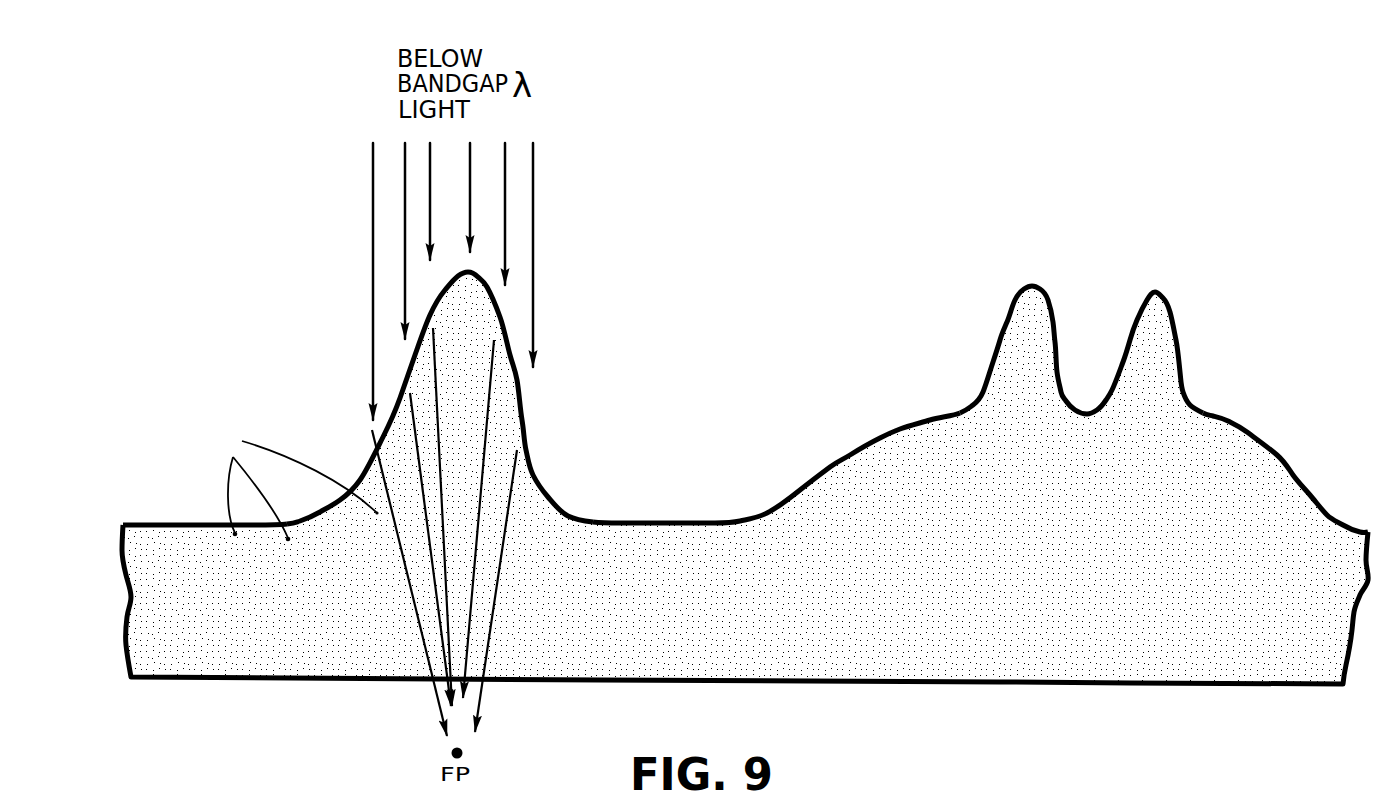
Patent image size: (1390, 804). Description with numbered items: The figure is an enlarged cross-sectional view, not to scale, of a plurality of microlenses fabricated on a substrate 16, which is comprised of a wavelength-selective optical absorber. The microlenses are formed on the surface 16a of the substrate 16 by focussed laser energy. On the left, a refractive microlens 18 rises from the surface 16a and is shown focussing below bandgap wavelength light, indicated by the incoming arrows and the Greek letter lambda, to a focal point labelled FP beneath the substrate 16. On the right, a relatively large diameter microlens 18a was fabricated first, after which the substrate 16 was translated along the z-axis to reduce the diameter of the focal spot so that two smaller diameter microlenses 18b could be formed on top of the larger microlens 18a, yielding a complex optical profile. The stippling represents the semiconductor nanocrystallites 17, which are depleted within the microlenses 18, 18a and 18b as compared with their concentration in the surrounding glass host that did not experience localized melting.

The substrate 16 is at (124, 617).
The surface of the substrate 16a is at (168, 523).
The semiconductor nanocrystallites 17 is at (294, 486).
The refractive microlens 18 is at (527, 430).
The large diameter microlens 18a is at (1260, 433).
The smaller diameter microlens 18b is at (1007, 320).